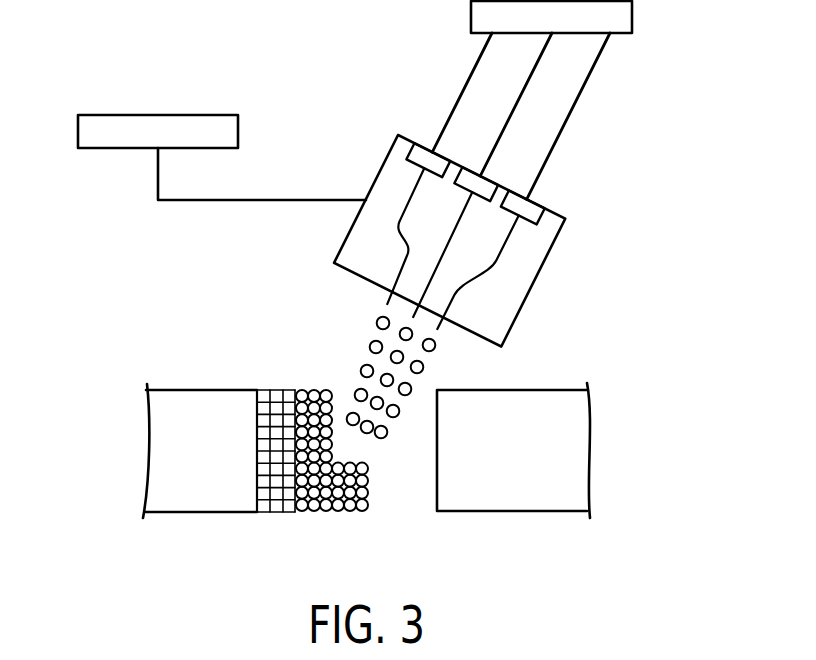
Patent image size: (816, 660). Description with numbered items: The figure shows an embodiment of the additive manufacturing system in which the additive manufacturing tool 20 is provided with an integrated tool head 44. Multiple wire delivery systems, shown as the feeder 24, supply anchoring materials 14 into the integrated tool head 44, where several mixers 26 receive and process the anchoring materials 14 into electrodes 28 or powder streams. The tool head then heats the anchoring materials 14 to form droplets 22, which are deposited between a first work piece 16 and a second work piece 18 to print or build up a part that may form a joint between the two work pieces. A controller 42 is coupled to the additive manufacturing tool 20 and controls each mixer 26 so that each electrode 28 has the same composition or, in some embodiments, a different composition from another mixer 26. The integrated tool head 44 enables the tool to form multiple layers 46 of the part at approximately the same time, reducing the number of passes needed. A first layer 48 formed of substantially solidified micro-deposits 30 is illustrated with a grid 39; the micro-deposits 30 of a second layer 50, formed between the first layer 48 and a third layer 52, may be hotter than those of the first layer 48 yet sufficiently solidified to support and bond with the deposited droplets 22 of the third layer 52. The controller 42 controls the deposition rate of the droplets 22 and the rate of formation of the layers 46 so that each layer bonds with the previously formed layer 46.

The anchoring materials 14 is at (463, 92).
The first work piece 16 is at (213, 466).
The second work piece 18 is at (525, 466).
The additive manufacturing tool 20 is at (513, 213).
The droplets 22 is at (370, 346).
The feeder 24 is at (633, 15).
The mixer 26 is at (430, 144).
The electrode 28 is at (443, 256).
The micro-deposits 30 is at (330, 378).
The grid 39 is at (257, 380).
The controller 42 is at (78, 132).
The integrated tool head 44 is at (535, 282).
The layers 46 is at (312, 485).
The first layer 48 is at (295, 519).
The second layer 50 is at (331, 519).
The third layer 52 is at (333, 519).